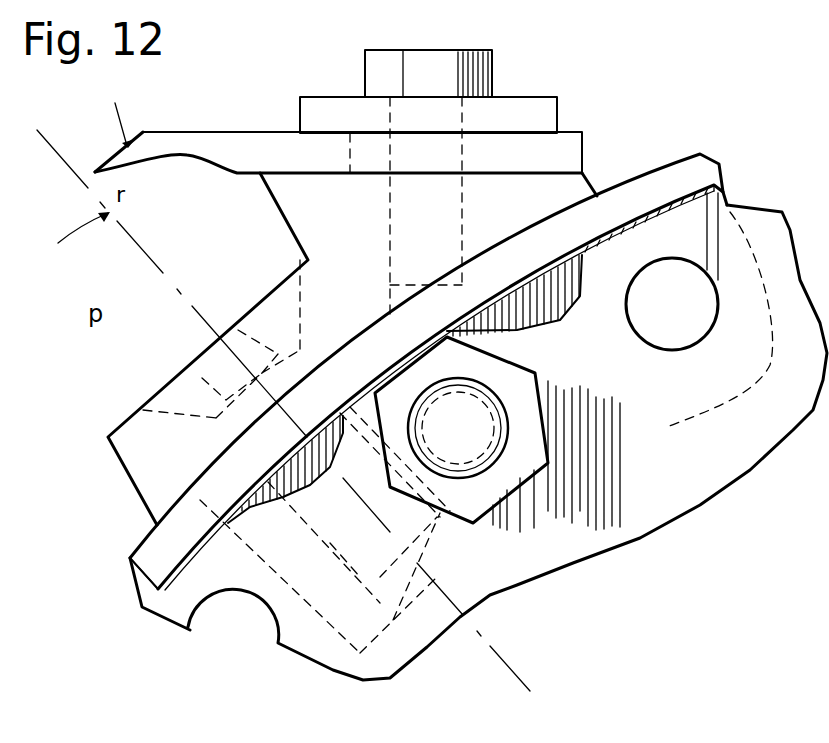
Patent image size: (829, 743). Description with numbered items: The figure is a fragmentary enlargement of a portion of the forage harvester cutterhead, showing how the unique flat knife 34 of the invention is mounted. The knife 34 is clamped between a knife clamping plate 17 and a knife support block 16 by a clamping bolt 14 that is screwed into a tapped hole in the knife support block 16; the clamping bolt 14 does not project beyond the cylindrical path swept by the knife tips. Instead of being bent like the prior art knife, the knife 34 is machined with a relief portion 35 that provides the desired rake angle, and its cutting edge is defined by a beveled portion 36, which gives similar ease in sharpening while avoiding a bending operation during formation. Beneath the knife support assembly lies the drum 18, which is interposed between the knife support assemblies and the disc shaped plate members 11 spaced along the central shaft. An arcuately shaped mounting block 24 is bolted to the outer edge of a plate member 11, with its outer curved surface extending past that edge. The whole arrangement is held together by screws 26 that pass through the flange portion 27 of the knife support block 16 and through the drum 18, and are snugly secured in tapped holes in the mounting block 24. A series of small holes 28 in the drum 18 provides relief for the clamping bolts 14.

The disc shaped plate member 11 is at (737, 462).
The clamping bolt 14 is at (447, 58).
The knife support block 16 is at (530, 198).
The knife clamping plate 17 is at (513, 112).
The drum 18 is at (153, 550).
The mounting block 24 is at (555, 295).
The screw 26 is at (490, 595).
The flange portion 27 is at (160, 438).
The small hole 28 is at (533, 340).
The knife 34 is at (248, 133).
The relief portion 35 is at (192, 160).
The beveled portion 36 is at (103, 165).